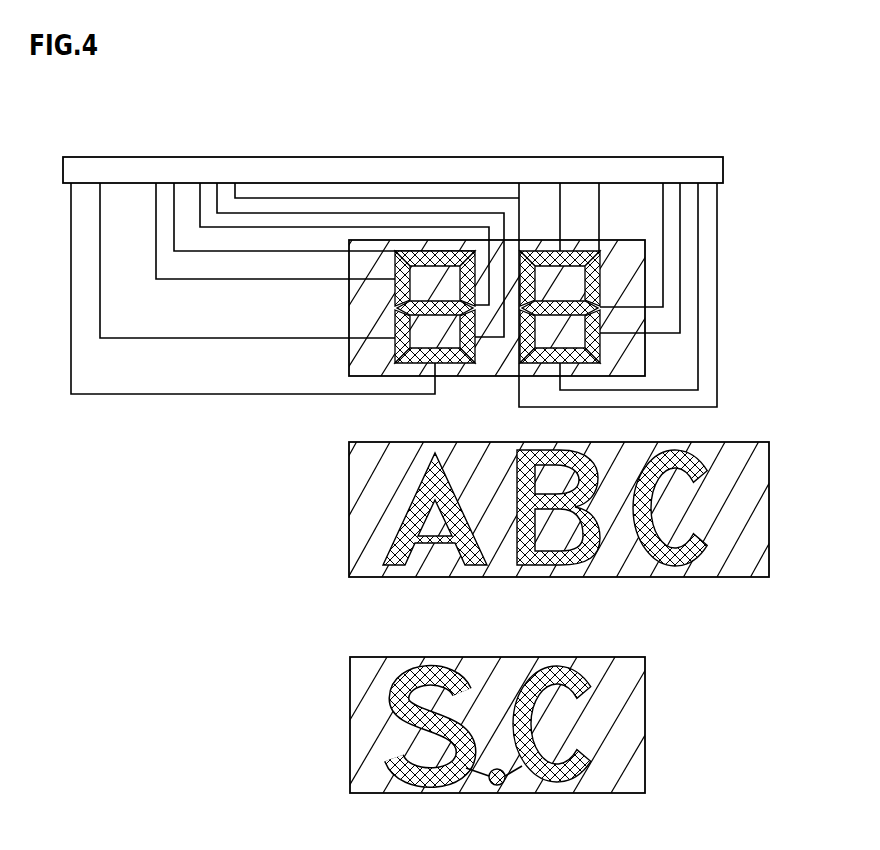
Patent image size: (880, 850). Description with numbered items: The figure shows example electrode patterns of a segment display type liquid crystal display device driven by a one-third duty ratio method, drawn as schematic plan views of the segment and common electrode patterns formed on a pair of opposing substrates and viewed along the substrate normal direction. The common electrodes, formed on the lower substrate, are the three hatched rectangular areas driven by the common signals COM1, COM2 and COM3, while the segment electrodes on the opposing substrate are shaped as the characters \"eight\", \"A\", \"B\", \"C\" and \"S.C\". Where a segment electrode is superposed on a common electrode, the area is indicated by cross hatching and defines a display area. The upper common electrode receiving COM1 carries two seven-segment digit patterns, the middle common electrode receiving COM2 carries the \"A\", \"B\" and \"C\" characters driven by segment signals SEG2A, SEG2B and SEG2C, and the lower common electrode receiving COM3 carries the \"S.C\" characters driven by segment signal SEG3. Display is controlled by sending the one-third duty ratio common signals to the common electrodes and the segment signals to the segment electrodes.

The common signal COM1 is at (349, 309).
The common signal COM2 is at (480, 527).
The common signal COM3 is at (413, 745).
The segment signal SEG2A is at (436, 533).
The segment signal SEG2B is at (576, 531).
The segment signal SEG2C is at (702, 531).
The segment signal SEG3 is at (492, 749).